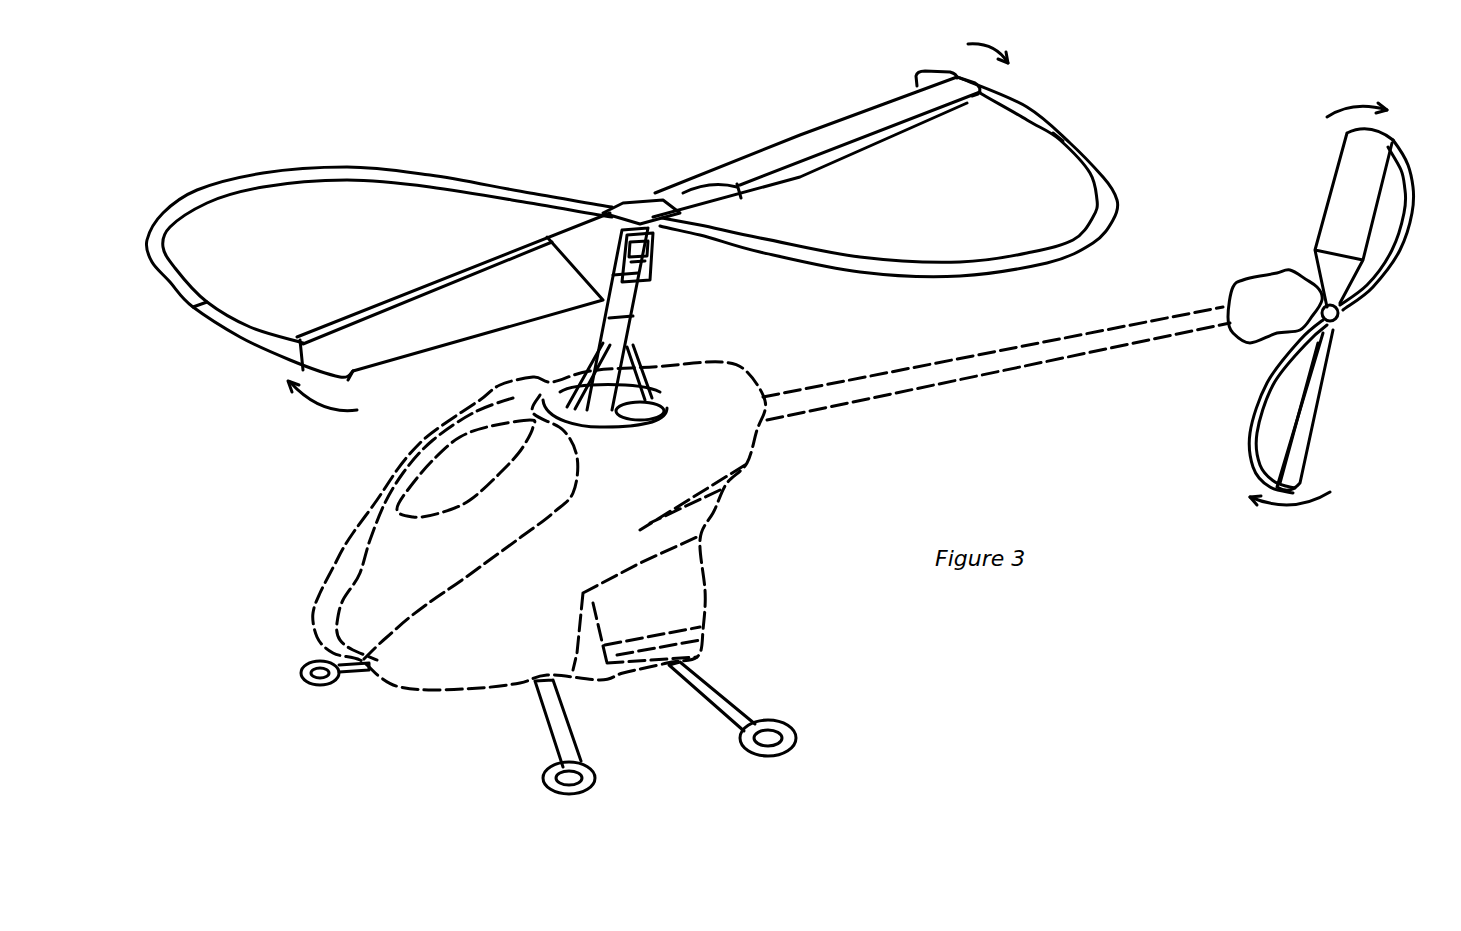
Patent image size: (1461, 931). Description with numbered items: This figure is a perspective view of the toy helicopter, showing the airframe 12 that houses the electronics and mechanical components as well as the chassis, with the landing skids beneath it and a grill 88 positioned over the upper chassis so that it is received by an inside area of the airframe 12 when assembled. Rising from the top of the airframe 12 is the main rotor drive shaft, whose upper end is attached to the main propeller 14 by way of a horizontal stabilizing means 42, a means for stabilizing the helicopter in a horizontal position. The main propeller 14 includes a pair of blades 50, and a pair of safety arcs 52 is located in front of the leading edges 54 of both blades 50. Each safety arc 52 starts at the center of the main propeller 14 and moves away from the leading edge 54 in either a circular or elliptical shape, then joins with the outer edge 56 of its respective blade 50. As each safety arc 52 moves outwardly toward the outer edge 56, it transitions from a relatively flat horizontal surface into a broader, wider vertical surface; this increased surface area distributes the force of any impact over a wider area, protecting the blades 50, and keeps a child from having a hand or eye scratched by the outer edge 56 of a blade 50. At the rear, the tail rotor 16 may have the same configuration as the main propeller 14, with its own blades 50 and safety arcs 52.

The airframe 12 is at (746, 450).
The main propeller 14 is at (604, 173).
The tail rotor 16 is at (1300, 240).
The horizontal stabilizing means 42 is at (655, 263).
The blade 50 is at (423, 300).
The safety arc 52 is at (447, 180).
The leading edge 54 is at (440, 273).
The outer edge 56 is at (327, 347).
The grill 88 is at (662, 388).